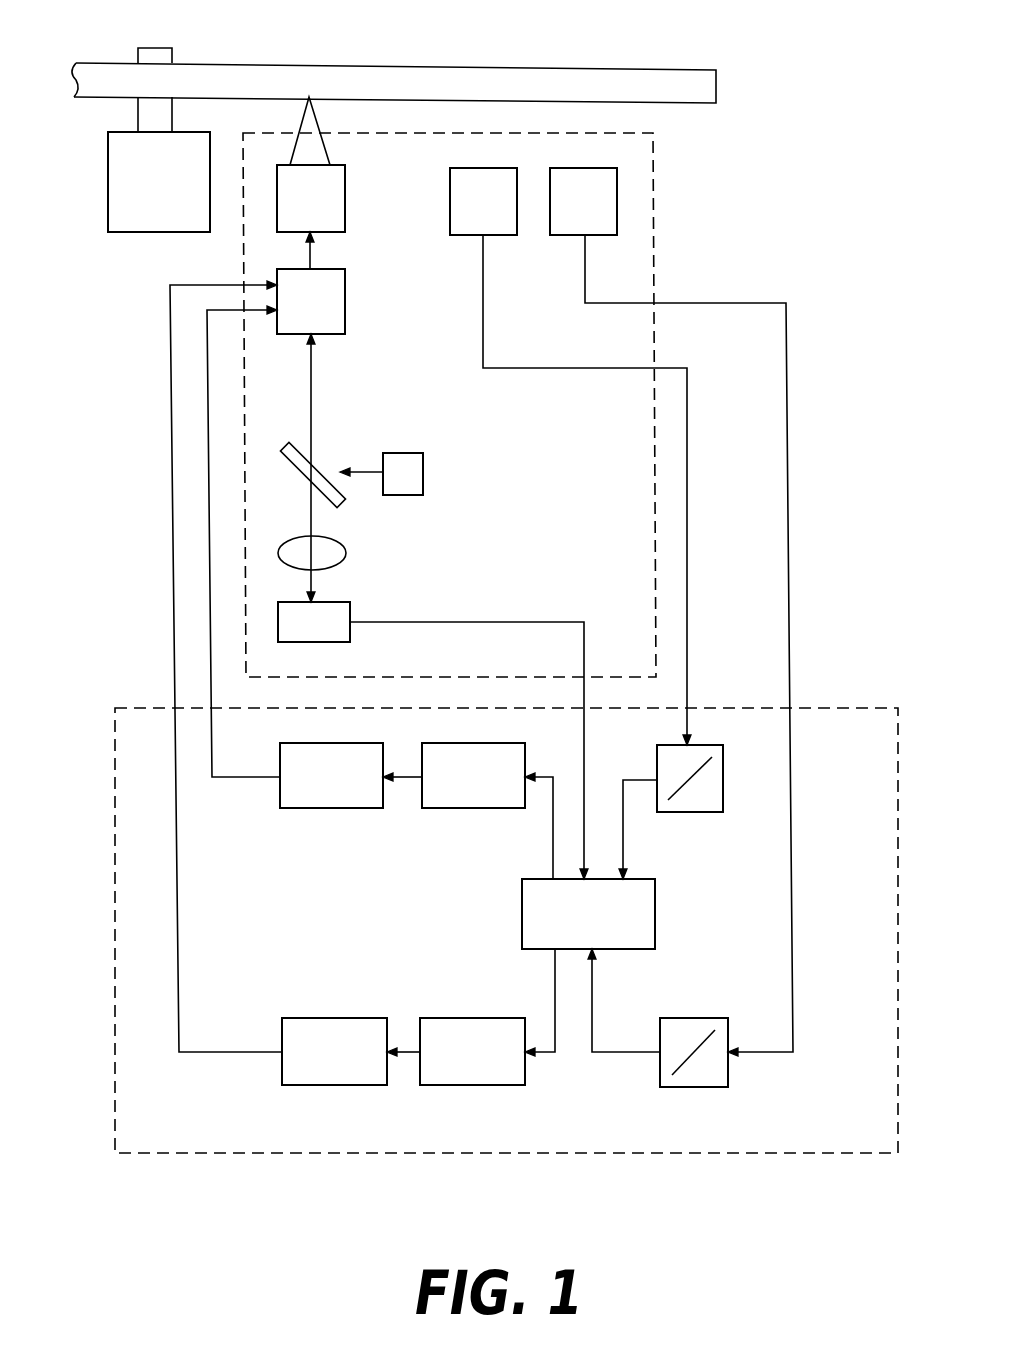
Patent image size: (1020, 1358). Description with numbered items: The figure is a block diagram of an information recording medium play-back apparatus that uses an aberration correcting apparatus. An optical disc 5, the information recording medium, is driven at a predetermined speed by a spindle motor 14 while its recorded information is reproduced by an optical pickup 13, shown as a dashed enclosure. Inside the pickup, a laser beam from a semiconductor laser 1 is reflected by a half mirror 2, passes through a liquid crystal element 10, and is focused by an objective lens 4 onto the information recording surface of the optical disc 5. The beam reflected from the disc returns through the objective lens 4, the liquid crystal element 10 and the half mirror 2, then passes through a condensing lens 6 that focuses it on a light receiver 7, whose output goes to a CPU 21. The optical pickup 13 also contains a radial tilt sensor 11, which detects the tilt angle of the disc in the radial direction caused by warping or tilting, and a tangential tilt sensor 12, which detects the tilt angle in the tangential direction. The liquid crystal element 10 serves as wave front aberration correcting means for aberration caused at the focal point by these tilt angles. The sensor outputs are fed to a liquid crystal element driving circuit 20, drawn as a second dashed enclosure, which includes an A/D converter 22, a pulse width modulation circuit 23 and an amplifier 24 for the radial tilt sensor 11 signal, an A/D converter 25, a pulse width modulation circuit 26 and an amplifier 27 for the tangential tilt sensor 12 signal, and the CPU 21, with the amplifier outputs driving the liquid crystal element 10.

The semiconductor laser 1 is at (423, 468).
The half mirror 2 is at (315, 467).
The objective lens 4 is at (345, 200).
The optical disc 5 is at (515, 65).
The condensing lens 6 is at (347, 555).
The light receiver 7 is at (350, 602).
The liquid crystal element 10 is at (347, 318).
The radial tilt sensor 11 is at (550, 235).
The tangential tilt sensor 12 is at (450, 235).
The optical pickup 13 is at (653, 198).
The spindle motor 14 is at (108, 193).
The liquid crystal element driving circuit 20 is at (815, 1155).
The CPU 21 is at (628, 950).
The A/D converter 22 is at (702, 1090).
The pulse width modulation (PWM) circuit 23 is at (452, 1085).
The amplifier 24 is at (310, 1085).
The A/D converter 25 is at (688, 812).
The pulse width modulation (PWM) circuit 26 is at (440, 810).
The amplifier 27 is at (322, 810).